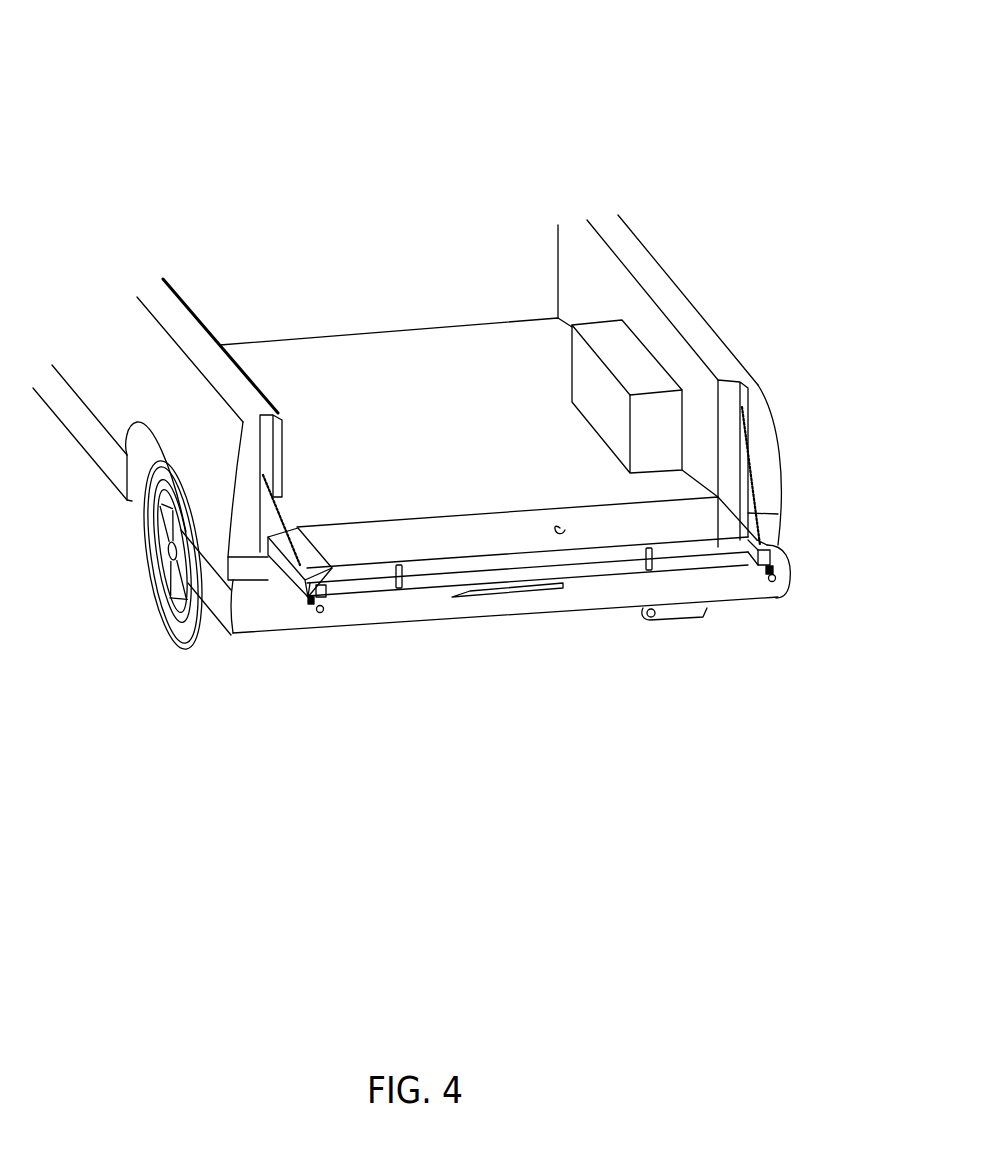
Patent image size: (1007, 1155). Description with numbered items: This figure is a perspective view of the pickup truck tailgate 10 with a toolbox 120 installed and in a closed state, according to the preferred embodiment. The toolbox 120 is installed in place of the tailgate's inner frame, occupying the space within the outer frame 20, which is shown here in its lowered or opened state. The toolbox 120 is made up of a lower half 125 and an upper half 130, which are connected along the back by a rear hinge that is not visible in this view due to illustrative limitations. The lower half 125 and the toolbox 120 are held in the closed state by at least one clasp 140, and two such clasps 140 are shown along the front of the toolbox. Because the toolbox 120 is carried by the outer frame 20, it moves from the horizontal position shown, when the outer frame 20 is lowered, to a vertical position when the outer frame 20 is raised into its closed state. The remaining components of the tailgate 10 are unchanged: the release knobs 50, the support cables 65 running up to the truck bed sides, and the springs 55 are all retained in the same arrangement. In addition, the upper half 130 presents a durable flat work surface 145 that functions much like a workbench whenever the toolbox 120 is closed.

The tailgate 10 is at (111, 171).
The outer frame 20 is at (307, 586).
The release knob 50 is at (319, 612).
The spring 55 is at (311, 600).
The support cable 65 is at (281, 516).
The toolbox 120 is at (418, 492).
The lower half 125 is at (535, 585).
The upper half 130 is at (465, 565).
The clasp 140 is at (397, 582).
The flat work surface 145 is at (565, 530).